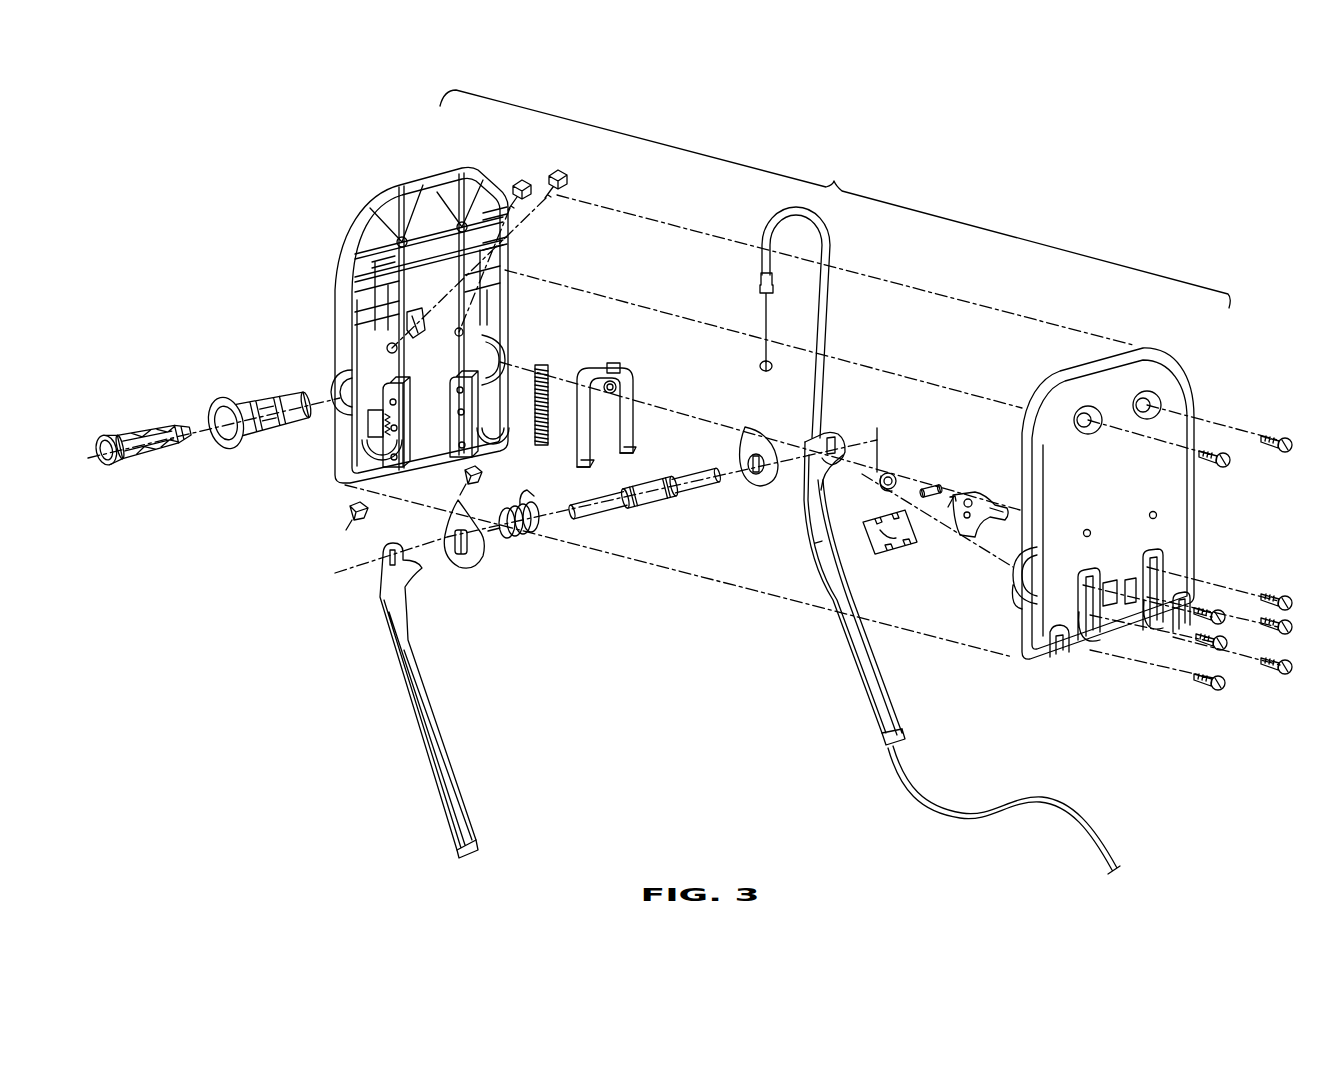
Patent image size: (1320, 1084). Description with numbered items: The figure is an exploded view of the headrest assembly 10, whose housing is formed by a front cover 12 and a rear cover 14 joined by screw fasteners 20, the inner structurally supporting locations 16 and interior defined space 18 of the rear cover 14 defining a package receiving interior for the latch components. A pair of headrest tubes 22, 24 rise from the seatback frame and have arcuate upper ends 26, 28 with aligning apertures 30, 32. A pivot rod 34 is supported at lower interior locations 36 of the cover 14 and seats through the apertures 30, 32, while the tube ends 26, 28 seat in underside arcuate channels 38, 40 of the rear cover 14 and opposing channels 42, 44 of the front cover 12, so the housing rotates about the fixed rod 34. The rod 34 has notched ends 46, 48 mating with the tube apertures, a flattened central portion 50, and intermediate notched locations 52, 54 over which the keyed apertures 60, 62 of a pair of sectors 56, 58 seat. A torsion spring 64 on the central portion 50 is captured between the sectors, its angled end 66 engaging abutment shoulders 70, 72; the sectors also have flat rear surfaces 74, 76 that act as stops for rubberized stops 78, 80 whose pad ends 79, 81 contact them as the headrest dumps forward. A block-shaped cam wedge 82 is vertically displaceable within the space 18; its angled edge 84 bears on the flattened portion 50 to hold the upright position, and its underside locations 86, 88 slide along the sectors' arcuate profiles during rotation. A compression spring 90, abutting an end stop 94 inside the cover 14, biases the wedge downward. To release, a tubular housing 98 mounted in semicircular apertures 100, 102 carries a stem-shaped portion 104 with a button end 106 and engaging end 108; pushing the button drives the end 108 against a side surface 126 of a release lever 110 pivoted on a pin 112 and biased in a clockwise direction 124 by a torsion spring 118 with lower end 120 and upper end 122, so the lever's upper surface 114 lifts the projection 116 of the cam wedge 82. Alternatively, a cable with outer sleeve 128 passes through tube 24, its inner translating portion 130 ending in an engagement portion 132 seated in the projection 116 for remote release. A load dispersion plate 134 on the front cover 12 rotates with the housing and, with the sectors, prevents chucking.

The headrest assembly 10 is at (835, 199).
The front cover 12 is at (1107, 530).
The rear cover 14 is at (401, 315).
The inner structurally supporting locations 16 is at (368, 240).
The interior defined space 18 is at (409, 300).
The screw fasteners 20 is at (1280, 437).
The headrest tube 22 is at (387, 700).
The headrest tube 24 is at (907, 527).
The arcuate upper end 26 is at (388, 553).
The arcuate upper end 28 is at (841, 472).
The aperture 30 is at (398, 566).
The aperture 32 is at (838, 432).
The pivot rod 34 is at (645, 513).
The lower width extending interior locations 36 is at (383, 445).
The arcuate channel 38 is at (372, 460).
The arcuate channel 40 is at (492, 438).
The arcuate channel 42 is at (1058, 662).
The arcuate channel 44 is at (1174, 636).
The notched end 46 is at (573, 514).
The notched end 48 is at (720, 480).
The central portion 50 is at (650, 500).
The intermediate notched location 52 is at (667, 488).
The intermediate notched location 54 is at (676, 490).
The sector 56 is at (397, 552).
The sector 58 is at (739, 469).
The keyed interior aperture 60 is at (472, 552).
The keyed interior aperture 62 is at (768, 442).
The torsion spring 64 is at (530, 496).
The angled end 66 is at (499, 507).
The abutment shoulder 70 is at (380, 546).
The abutment shoulder 72 is at (748, 463).
The flat rear surface 74 is at (452, 512).
The flat rear surface 76 is at (748, 430).
The rubberized stop 78 is at (515, 183).
The pad end 79 is at (350, 508).
The rubberized stop 80 is at (552, 178).
The pad end 81 is at (478, 474).
The cam wedge 82 is at (608, 401).
The angled edge 84 is at (617, 516).
The underside edge location 86 is at (578, 463).
The underside edge location 88 is at (622, 452).
The compression spring 90 is at (546, 372).
The end stop 94 is at (405, 322).
The tubular housing 98 is at (262, 392).
The semicircular mating aperture 100 is at (1016, 584).
The semicircular mating aperture 102 is at (337, 388).
The stem-shaped portion 104 is at (166, 432).
The button shaped end 106 is at (106, 462).
The engaging end 108 is at (190, 432).
The release lever 110 is at (966, 506).
The pin 112 is at (932, 486).
The upper facing profile surface 114 is at (1000, 507).
The projection 116 is at (615, 368).
The torsion spring 118 is at (901, 436).
The lower end 120 is at (896, 484).
The upper end 122 is at (877, 428).
The clockwise direction 124 is at (975, 538).
The side disposed surface 126 is at (955, 517).
The outer sleeve 128 is at (762, 309).
The inner translating portion 130 is at (762, 283).
The engagement portion 132 is at (773, 366).
The load dispersion plate 134 is at (895, 553).